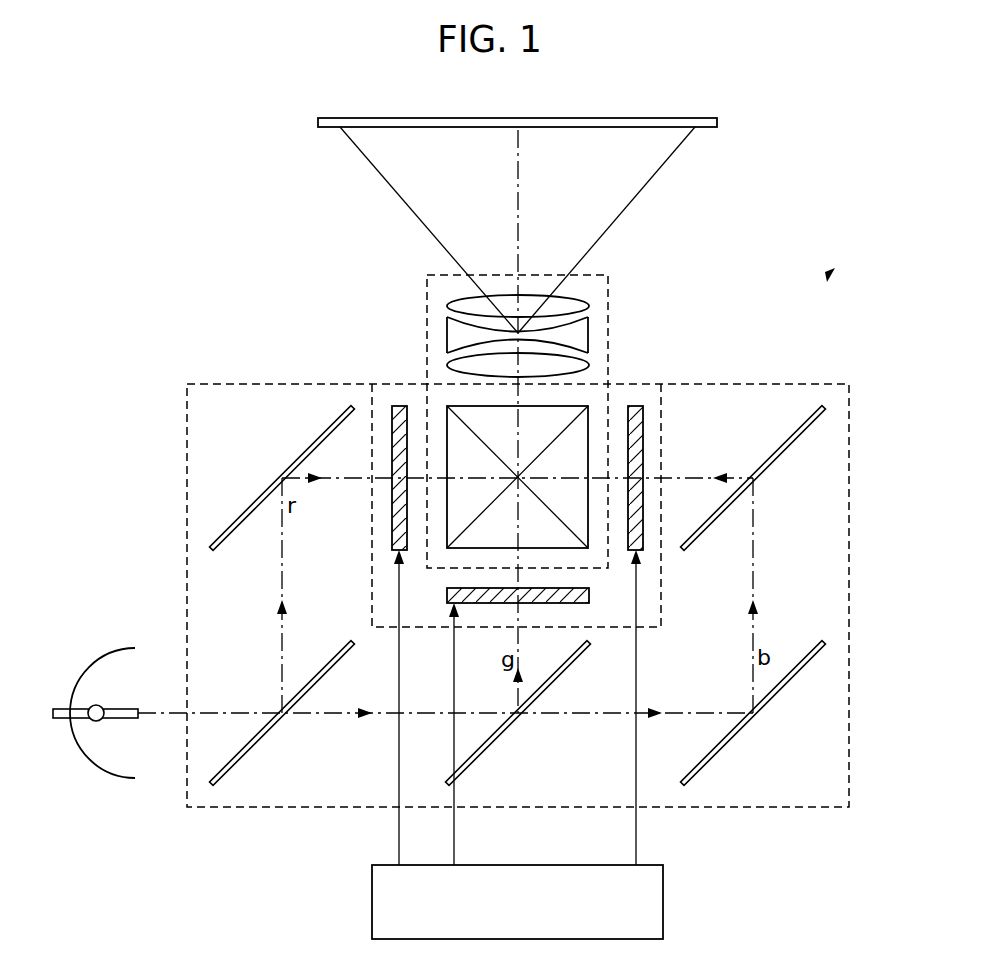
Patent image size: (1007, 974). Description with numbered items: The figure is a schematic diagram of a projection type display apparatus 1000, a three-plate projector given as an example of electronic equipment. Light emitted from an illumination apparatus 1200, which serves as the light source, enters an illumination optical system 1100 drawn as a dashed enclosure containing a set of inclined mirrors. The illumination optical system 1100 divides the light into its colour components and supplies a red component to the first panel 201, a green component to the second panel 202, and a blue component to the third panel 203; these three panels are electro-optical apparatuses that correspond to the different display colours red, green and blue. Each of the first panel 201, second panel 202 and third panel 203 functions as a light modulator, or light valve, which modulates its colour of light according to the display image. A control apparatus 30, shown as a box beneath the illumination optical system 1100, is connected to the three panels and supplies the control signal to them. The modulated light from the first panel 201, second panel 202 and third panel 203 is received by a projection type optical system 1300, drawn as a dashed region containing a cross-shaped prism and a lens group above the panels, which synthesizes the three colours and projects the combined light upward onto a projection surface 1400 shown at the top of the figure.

The projection type display apparatus 1000 is at (830, 278).
The illumination optical system 1100 is at (849, 478).
The illumination apparatus 1200 is at (105, 652).
The projection type optical system 1300 is at (608, 290).
The projection surface 1400 is at (590, 128).
The first panel 201 is at (397, 405).
The second panel 202 is at (447, 597).
The third panel 203 is at (634, 405).
The control apparatus 30 is at (663, 900).